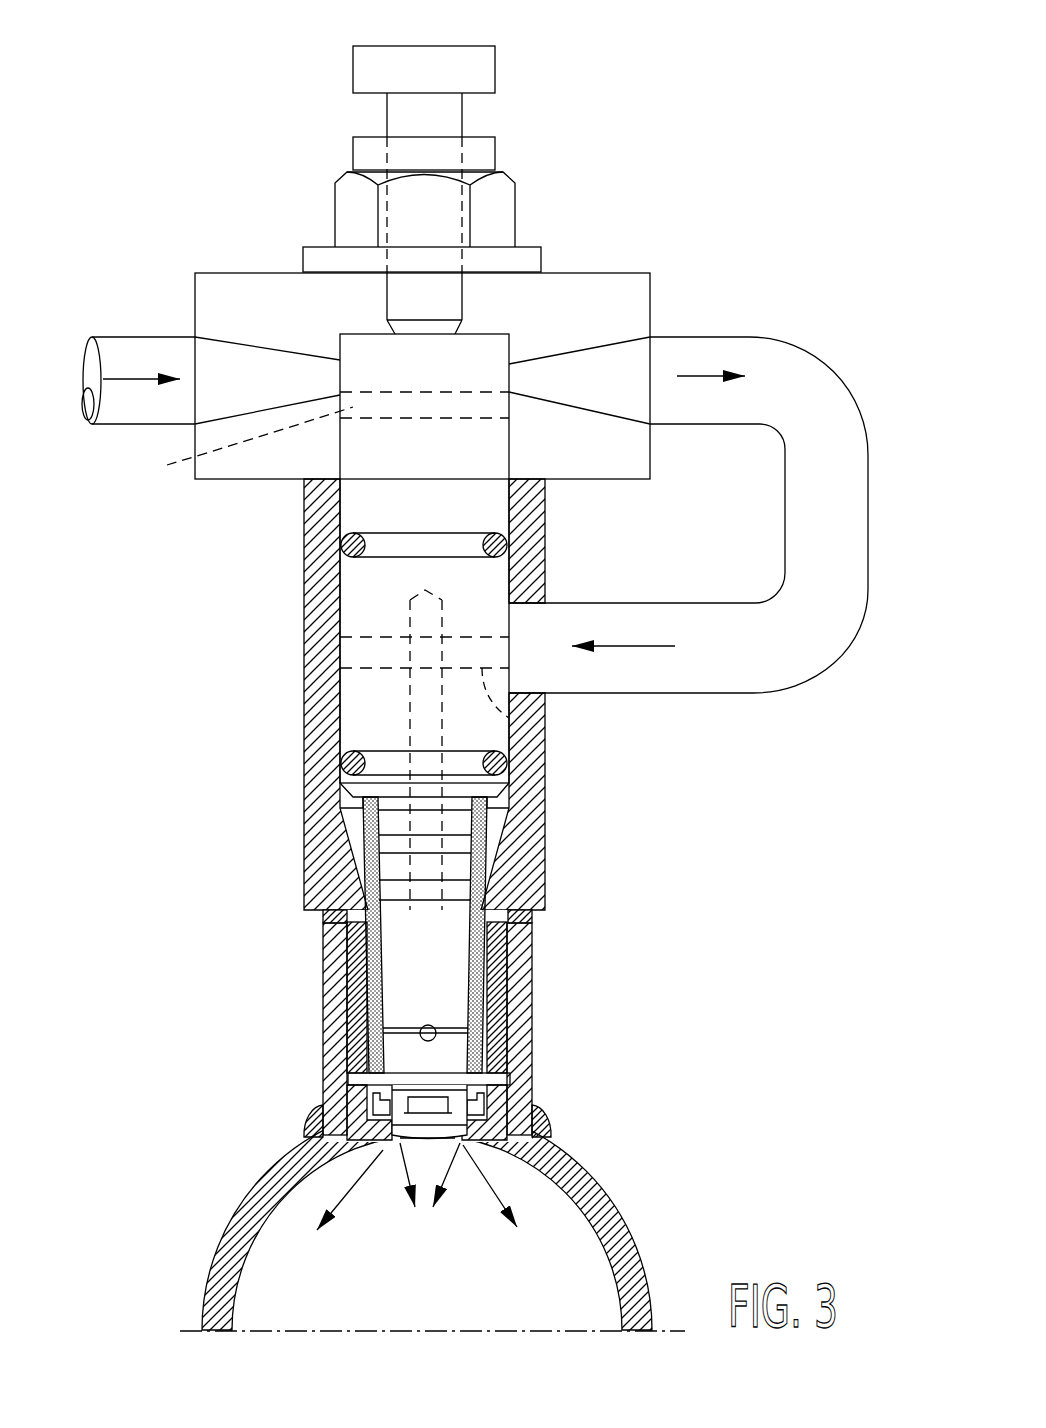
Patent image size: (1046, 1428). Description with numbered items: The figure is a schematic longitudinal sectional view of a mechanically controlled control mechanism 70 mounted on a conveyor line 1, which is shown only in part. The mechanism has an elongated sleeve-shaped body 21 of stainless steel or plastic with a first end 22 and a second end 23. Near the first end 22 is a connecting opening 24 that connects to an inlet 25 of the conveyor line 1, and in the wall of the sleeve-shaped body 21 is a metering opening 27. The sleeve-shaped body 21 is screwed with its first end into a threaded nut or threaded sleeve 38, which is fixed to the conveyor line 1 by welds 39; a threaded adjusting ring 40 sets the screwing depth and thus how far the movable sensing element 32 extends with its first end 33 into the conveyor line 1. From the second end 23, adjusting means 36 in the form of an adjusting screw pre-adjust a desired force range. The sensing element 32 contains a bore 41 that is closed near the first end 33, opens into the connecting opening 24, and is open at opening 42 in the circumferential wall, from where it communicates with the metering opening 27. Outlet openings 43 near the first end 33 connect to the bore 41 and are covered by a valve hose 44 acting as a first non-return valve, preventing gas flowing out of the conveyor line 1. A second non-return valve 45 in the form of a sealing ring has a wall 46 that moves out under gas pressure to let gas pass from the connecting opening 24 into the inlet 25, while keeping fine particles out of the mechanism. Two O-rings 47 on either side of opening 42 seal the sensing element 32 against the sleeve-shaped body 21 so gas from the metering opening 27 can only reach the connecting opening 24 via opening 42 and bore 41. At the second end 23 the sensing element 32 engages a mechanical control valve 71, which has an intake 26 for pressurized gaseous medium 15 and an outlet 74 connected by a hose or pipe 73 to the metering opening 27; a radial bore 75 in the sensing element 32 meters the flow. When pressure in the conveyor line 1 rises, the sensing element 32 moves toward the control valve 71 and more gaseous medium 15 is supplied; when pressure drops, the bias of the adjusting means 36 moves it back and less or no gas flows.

The conveyor line 1 is at (600, 1202).
The pressurized gaseous medium 15 is at (127, 378).
The sleeve-shaped body 21 is at (523, 860).
The first end 22 is at (480, 972).
The second end 23 is at (532, 493).
The connecting opening 24 is at (473, 1062).
The inlet 25 is at (467, 1145).
The intake 26 is at (84, 380).
The metering opening 27 is at (532, 623).
The sensing element 32 is at (358, 510).
The first end 33 is at (390, 1145).
The adjusting means 36 is at (445, 116).
The threaded nut or threaded sleeve 38 is at (517, 937).
The welds 39 is at (320, 1125).
The threaded adjusting ring 40 is at (322, 913).
The bore 41 is at (422, 955).
The opening 42 is at (527, 727).
The outlet openings 43 is at (430, 1040).
The valve hose 44 is at (372, 1008).
The second non-return valve 45 is at (373, 1100).
The wall 46 is at (487, 1102).
The O-rings 47 is at (355, 560).
The mechanically controlled control mechanism 70 is at (583, 263).
The mechanical control valve 71 is at (628, 285).
The hose or pipe 73 is at (782, 665).
The outlet 74 is at (627, 392).
The bore 75 is at (245, 445).